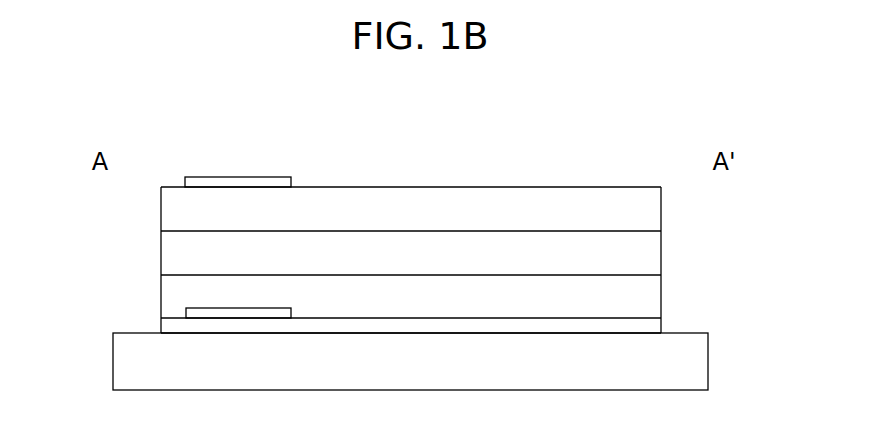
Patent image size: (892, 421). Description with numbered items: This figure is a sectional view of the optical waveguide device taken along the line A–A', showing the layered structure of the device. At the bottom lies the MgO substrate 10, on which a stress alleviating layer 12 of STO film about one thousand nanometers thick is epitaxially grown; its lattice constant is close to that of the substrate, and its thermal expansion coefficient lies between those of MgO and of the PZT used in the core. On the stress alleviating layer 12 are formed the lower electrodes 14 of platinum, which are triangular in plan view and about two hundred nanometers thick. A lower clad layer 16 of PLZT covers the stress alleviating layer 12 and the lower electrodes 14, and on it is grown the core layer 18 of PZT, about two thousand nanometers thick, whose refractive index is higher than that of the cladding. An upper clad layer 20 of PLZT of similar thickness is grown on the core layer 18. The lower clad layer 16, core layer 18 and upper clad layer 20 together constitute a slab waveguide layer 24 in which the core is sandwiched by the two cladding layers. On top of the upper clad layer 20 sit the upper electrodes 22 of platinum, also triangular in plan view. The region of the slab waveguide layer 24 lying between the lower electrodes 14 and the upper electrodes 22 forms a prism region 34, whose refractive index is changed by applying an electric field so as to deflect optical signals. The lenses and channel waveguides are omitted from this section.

The MgO substrate 10 is at (698, 370).
The stress alleviating layer 12 is at (650, 328).
The lower electrodes 14 is at (277, 306).
The lower clad layer 16 is at (652, 292).
The core layer 18 is at (652, 250).
The upper clad layer 20 is at (652, 210).
The upper electrodes 22 is at (270, 176).
The slab waveguide layer 24 is at (712, 192).
The prism regions 34 is at (293, 128).